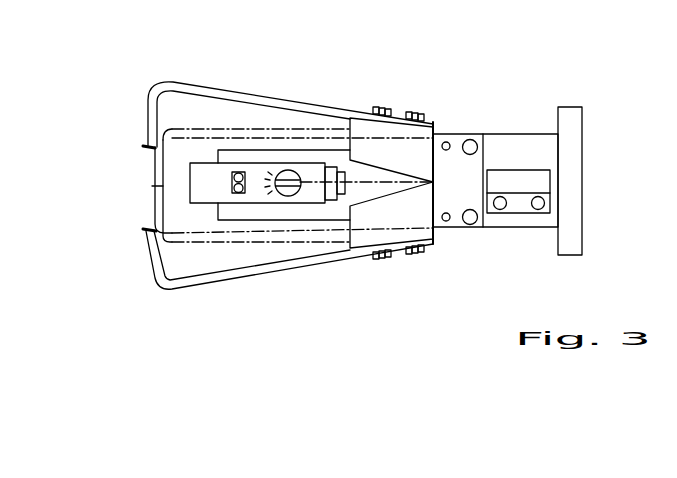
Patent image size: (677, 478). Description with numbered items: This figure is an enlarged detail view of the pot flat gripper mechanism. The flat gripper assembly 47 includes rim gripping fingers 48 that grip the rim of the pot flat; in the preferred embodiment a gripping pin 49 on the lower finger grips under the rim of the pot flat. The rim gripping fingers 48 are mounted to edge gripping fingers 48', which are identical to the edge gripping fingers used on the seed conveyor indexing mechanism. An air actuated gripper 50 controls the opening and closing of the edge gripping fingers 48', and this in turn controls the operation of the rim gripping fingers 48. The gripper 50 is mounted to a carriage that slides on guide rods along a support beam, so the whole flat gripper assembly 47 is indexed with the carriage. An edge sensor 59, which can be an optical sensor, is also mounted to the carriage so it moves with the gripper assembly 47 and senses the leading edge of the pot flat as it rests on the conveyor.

The flat gripper assembly 47 is at (463, 129).
The rim gripping fingers 48 is at (289, 186).
The edge gripping fingers 48' is at (410, 186).
The gripping pin 49 is at (151, 227).
The air actuated gripper 50 is at (503, 217).
The edge sensor 59 is at (253, 168).